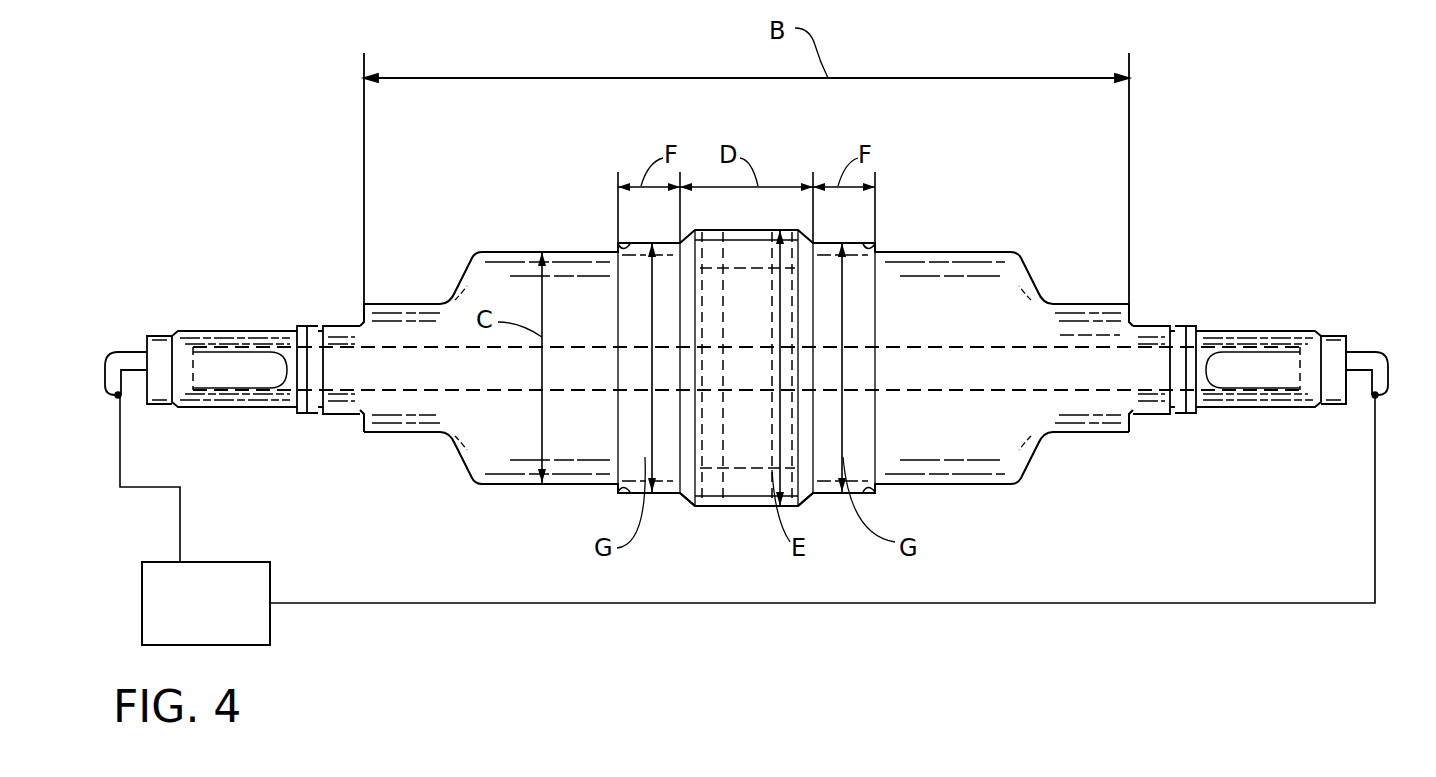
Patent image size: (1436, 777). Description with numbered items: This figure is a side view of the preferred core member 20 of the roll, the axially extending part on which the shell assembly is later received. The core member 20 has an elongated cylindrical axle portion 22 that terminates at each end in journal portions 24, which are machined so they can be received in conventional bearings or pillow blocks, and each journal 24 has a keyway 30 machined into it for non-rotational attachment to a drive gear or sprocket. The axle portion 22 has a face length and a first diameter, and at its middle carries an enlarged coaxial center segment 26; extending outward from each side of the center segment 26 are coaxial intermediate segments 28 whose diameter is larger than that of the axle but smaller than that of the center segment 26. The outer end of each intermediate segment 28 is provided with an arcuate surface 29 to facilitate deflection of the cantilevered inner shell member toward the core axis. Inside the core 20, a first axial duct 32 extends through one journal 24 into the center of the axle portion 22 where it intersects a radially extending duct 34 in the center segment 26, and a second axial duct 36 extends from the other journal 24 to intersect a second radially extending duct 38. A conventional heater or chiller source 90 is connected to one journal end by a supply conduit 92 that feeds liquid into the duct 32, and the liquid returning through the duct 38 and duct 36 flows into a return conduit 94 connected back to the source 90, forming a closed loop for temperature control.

The core member 20 is at (982, 489).
The axle portion 22 is at (975, 246).
The journal portions 24 is at (260, 315).
The center segment 26 is at (761, 371).
The intermediate segments 28 is at (648, 308).
The arcuate surface 29 is at (620, 243).
The keyway 30 is at (1300, 358).
The first axial duct 32 is at (400, 388).
The radially extending duct 34 is at (702, 506).
The second axial duct 36 is at (1113, 343).
The radially extending duct 38 is at (806, 506).
The source of heat transfer fluid 90 is at (215, 613).
The supply conduit 92 is at (113, 368).
The return conduit 94 is at (1370, 395).